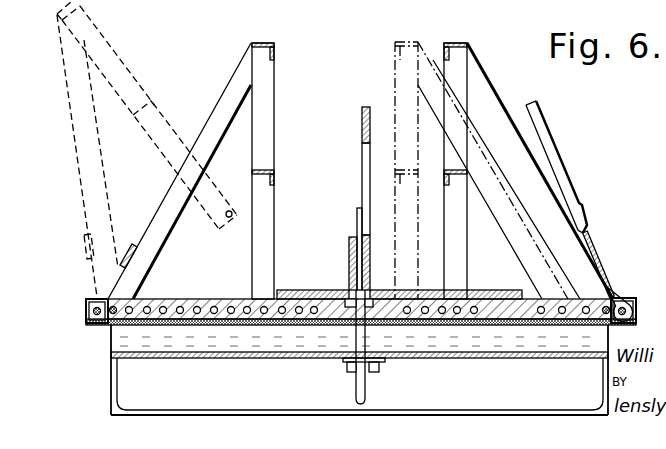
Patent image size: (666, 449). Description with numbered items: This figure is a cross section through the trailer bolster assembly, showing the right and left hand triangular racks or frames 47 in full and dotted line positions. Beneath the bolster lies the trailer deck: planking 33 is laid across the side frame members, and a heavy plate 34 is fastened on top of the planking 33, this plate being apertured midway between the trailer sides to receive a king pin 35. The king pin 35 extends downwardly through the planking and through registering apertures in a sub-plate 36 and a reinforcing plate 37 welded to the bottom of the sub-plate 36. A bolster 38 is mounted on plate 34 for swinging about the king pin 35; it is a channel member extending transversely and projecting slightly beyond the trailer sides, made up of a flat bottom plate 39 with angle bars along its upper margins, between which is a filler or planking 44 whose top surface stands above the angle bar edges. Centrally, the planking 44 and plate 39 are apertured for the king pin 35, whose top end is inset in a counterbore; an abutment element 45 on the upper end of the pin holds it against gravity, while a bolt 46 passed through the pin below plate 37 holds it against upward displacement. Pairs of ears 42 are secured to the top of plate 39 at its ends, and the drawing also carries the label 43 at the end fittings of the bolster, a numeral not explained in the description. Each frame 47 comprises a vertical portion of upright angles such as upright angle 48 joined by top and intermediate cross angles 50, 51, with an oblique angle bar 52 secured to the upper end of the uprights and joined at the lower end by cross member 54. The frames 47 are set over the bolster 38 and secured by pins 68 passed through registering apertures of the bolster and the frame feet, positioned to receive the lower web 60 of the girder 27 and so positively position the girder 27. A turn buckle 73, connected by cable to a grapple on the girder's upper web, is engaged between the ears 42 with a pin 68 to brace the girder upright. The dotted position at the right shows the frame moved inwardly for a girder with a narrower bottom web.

The girder 27 is at (362, 143).
The planking 33 is at (538, 345).
The heavy plate 34 is at (600, 328).
The king pin 35 is at (352, 379).
The sub-plate 36 is at (473, 358).
The reinforcing plate 37 is at (382, 360).
The bolster 38 is at (244, 290).
The flat bottom plate 39 is at (100, 327).
The ears 42 is at (86, 318).
The pivot bracket 43 is at (100, 300).
The filler or planking 44 is at (199, 298).
The abutment element 45 is at (350, 290).
The bolt 46 is at (366, 372).
The triangular racks or frames 47 is at (231, 80).
The upright angle 48 is at (270, 120).
The top cross angle 50 is at (274, 46).
The intermediate cross angle 51 is at (276, 172).
The oblique angle bar 52 is at (190, 160).
The cross member 54 is at (128, 248).
The lower web 60 is at (388, 296).
The pins 68 is at (134, 298).
The turn buckle 73 is at (550, 160).